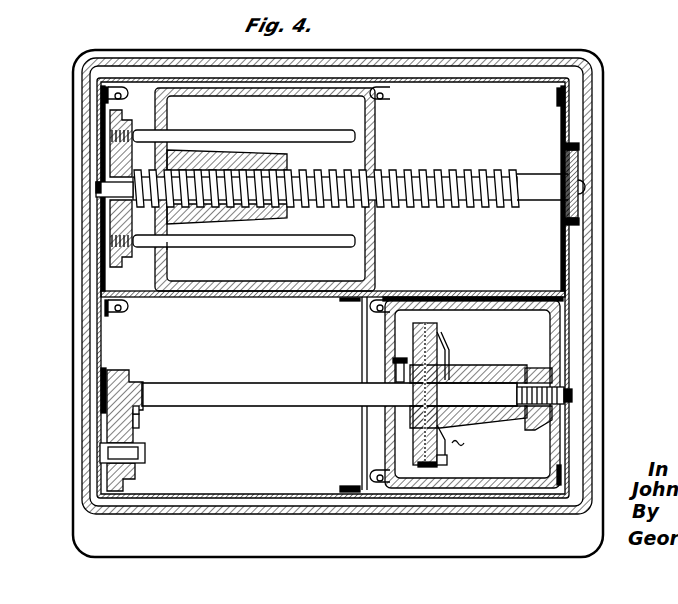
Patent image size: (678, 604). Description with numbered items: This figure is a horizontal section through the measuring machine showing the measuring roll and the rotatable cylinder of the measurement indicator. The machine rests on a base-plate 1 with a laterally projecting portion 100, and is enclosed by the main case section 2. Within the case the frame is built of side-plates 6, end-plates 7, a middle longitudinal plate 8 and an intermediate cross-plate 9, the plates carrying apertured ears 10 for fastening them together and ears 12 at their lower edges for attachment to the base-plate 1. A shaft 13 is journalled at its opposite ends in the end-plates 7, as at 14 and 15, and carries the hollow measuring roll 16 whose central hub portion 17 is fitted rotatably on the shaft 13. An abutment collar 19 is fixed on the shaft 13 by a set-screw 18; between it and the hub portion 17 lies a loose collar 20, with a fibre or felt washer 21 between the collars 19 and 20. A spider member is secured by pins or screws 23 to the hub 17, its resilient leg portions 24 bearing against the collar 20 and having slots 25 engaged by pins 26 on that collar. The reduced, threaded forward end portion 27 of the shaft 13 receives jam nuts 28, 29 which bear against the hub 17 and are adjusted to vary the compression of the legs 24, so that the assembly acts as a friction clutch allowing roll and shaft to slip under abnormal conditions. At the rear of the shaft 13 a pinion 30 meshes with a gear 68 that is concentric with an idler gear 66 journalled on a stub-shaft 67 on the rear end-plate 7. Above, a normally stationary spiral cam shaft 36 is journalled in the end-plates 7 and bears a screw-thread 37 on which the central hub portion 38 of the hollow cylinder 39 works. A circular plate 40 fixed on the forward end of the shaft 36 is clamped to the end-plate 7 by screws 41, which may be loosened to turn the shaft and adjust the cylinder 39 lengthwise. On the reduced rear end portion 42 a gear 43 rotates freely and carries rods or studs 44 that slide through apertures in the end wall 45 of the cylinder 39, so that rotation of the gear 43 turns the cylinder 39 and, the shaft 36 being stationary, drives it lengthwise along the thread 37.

The base-plate 1 is at (423, 57).
The main case section 2 is at (478, 63).
The side-plates 6 is at (516, 78).
The end-plates 7 is at (101, 268).
The middle longitudinal plate 8 is at (420, 292).
The intermediate cross-plate 9 is at (361, 330).
The ears 10 is at (106, 90).
The ears 12 is at (121, 90).
The shaft 13 is at (233, 388).
The journal 14 is at (103, 395).
The journal 15 is at (574, 393).
The measuring roll 16 is at (488, 296).
The central hub portion 17 is at (492, 362).
The set-screw 18 is at (395, 363).
The abutment collar 19 is at (420, 436).
The loose collar 20 is at (448, 466).
The fibre or felt washer 21 is at (430, 468).
The pins or screws 23 is at (443, 377).
The resilient leg portions 24 is at (443, 352).
The slots 25 is at (662, 283).
The pins 26 is at (466, 443).
The forward end portion 27 is at (575, 386).
The jam nut 28 is at (532, 420).
The jam nut 29 is at (578, 408).
The pinion 30 is at (122, 372).
The spiral cam shaft 36 is at (530, 178).
The screw-thread 37 is at (433, 170).
The central hub portion 38 is at (235, 160).
The hollow cylinder 39 is at (360, 155).
The circular plate 40 is at (580, 172).
The screws 41 is at (580, 148).
The rear end portion 42 is at (115, 184).
The gear 43 is at (116, 226).
The rods or studs 44 is at (205, 130).
The end wall 45 is at (184, 254).
The intermediate idler gear 66 is at (140, 426).
The stub-shaft 67 is at (125, 454).
The gear 68 is at (140, 416).
The laterally projecting portion 100 is at (188, 562).